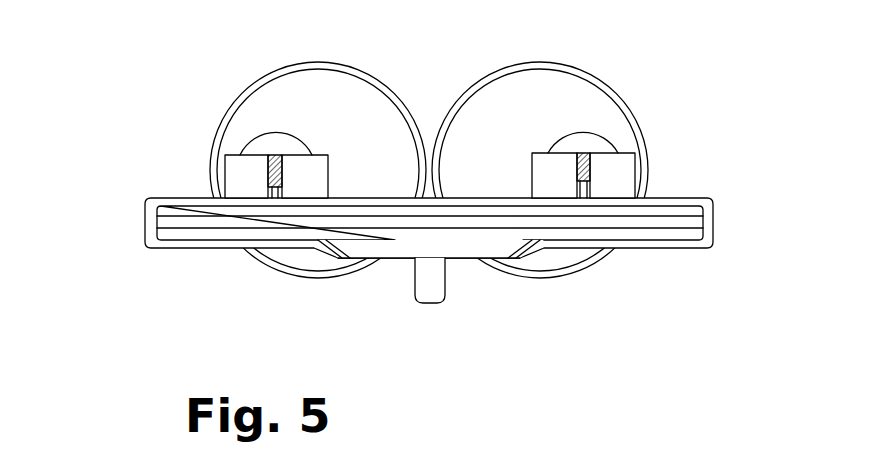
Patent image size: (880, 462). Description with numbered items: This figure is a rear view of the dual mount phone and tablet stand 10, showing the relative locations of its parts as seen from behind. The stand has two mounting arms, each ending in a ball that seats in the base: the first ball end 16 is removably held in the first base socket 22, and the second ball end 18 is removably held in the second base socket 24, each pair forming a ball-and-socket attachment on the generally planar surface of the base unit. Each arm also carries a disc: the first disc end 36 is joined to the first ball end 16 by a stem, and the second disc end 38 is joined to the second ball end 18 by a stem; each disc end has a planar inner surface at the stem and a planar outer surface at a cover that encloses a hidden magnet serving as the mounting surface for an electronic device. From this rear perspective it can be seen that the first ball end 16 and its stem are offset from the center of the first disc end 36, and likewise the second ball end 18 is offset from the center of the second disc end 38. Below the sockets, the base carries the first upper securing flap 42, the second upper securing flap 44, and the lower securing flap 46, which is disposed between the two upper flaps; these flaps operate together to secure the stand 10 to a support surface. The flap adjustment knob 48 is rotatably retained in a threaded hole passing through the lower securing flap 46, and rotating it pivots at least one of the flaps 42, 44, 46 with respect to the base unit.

The dual mount phone and tablet stand 10 is at (742, 68).
The first ball end 16 is at (262, 137).
The second ball end 18 is at (597, 133).
The first base socket 22 is at (237, 168).
The second base socket 24 is at (620, 177).
The first disc end 36 is at (303, 60).
The second disc end 38 is at (530, 61).
The first upper securing flap 42 is at (160, 220).
The second upper securing flap 44 is at (660, 228).
The lower securing flap 46 is at (391, 218).
The flap adjustment knob 48 is at (447, 288).